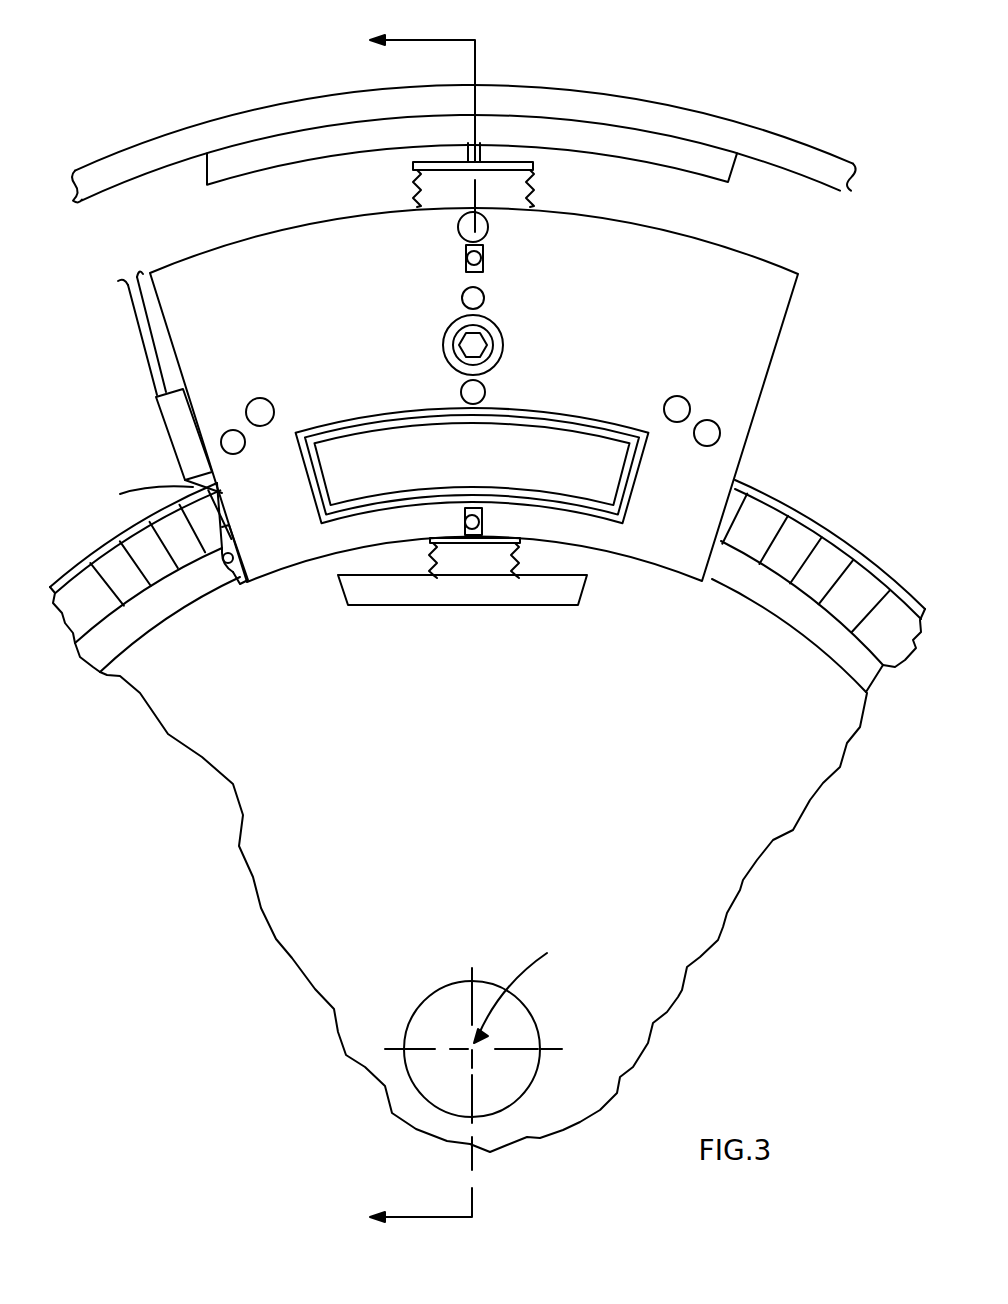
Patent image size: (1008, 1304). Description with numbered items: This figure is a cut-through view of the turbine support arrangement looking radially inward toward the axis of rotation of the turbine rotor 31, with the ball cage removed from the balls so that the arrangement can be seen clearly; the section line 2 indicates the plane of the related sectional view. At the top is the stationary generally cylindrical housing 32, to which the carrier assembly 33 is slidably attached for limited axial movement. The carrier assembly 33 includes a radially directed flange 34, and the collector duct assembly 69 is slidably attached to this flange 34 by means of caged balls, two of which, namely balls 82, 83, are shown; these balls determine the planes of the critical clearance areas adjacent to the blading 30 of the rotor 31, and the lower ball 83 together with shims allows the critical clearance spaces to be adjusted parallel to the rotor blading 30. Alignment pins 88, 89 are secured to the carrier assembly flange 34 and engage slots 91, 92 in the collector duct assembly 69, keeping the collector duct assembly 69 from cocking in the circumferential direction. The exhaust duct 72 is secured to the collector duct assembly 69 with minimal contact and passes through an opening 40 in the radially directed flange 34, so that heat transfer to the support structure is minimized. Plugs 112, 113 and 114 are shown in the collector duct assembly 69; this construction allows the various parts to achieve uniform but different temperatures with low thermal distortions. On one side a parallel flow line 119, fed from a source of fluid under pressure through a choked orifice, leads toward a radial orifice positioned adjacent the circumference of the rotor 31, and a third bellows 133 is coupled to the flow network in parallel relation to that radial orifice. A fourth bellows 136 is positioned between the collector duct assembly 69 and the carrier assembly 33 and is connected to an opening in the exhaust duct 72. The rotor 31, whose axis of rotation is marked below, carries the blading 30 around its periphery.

The section line 2- 2 is at (408, 630).
The blading 30 is at (826, 550).
The turbine rotor 31 is at (702, 923).
The housing 32 is at (612, 103).
The carrier assembly 33 is at (708, 167).
The radially directed flange 34 is at (530, 598).
The opening 40 is at (611, 528).
The collector duct assembly 69 is at (768, 330).
The exhaust duct 72 is at (562, 423).
The caged ball 82 is at (458, 228).
The caged ball 83 is at (264, 406).
The alignment pin 88 is at (483, 263).
The alignment pin 89 is at (482, 521).
The slot 91 is at (467, 257).
The slot 92 is at (462, 528).
The plug 112 is at (232, 430).
The plug 113 is at (485, 390).
The plug 114 is at (705, 446).
The parallel flow line 119 is at (147, 350).
The third bellows 133 is at (447, 568).
The fourth bellows 136 is at (518, 185).